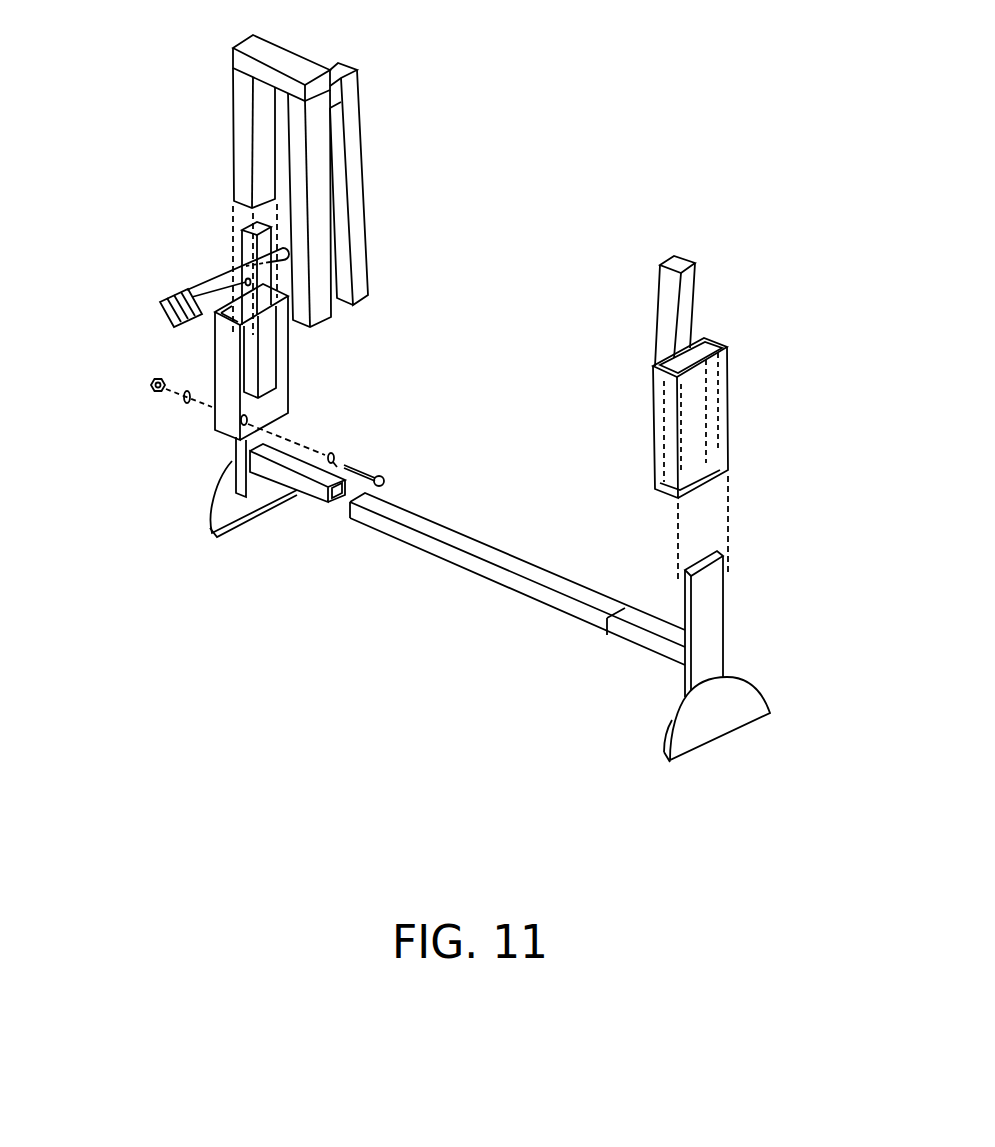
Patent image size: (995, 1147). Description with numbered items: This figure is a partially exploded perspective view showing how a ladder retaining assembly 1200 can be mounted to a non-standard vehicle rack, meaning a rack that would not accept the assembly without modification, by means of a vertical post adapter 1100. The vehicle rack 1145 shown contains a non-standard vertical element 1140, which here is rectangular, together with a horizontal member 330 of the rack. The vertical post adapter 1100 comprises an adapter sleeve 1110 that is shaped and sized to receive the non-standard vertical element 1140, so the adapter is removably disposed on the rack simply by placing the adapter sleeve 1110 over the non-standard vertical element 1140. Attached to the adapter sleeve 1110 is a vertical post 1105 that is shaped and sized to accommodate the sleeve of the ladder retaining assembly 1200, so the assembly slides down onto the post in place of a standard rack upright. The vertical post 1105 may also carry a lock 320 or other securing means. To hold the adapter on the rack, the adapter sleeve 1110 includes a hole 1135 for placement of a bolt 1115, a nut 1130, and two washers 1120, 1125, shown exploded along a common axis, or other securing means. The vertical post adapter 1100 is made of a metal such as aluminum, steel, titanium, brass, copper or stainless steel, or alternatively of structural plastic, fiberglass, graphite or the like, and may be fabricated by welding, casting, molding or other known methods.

The vertical post adapter 1100 is at (426, 493).
The vertical post 1105 is at (253, 242).
The adapter sleeve 1110 is at (284, 372).
The bolt 1115 is at (384, 473).
The washer 1120 is at (333, 455).
The washer 1125 is at (178, 403).
The nut 1130 is at (148, 375).
The hole 1135 is at (235, 418).
The non-standard vertical element 1140 is at (237, 447).
The vehicle rack 1145 is at (223, 505).
The ladder retaining assembly 1200 is at (327, 50).
The lock 320 is at (173, 295).
The horizontal member 330 is at (316, 492).